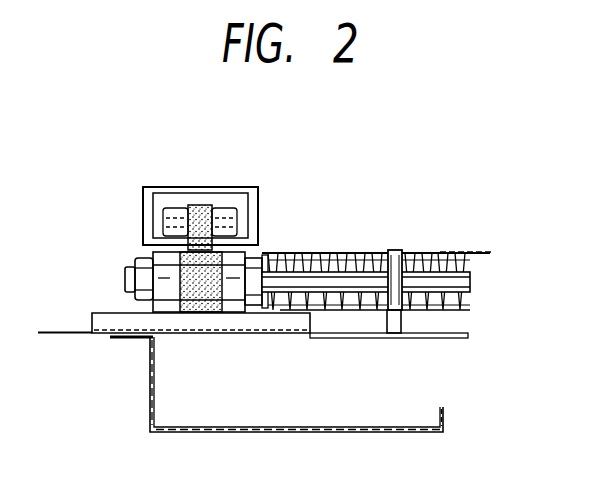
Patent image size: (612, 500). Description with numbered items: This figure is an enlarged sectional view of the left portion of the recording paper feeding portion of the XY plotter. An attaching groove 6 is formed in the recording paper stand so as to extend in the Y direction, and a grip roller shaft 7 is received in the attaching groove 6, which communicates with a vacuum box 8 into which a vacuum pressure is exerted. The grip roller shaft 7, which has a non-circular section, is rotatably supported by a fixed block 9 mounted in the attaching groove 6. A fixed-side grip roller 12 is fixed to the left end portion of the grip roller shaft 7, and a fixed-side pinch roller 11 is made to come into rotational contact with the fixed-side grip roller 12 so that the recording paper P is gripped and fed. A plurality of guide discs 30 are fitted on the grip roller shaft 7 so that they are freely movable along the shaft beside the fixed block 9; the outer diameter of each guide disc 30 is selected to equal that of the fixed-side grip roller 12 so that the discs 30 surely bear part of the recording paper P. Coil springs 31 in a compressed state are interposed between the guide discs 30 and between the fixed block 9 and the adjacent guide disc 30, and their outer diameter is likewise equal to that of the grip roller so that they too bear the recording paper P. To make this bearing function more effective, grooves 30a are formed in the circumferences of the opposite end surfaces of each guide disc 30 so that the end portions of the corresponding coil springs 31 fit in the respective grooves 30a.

The attaching groove 6 is at (440, 338).
The grip roller shaft 7 is at (337, 255).
The vacuum box 8 is at (260, 430).
The fixed block 9 is at (135, 320).
The fixed-side pinch roller 11 is at (202, 207).
The fixed-side grip roller 12 is at (192, 277).
The guide disc 30 is at (395, 250).
The groove 30a is at (399, 312).
The coil spring 31 is at (340, 295).
The recording paper P is at (493, 252).